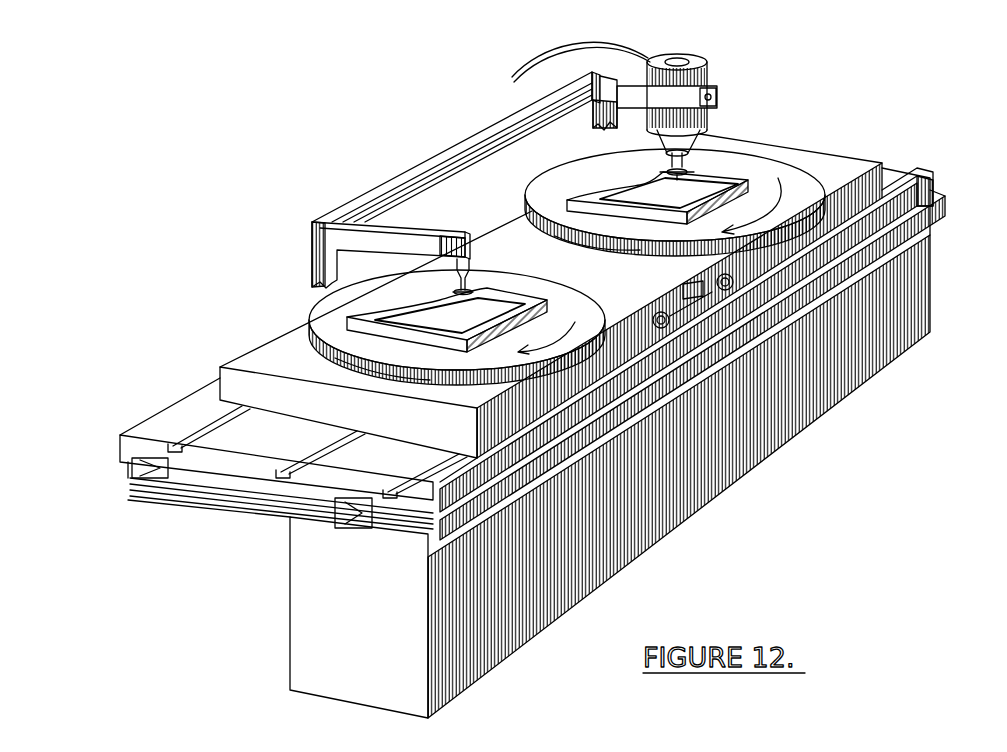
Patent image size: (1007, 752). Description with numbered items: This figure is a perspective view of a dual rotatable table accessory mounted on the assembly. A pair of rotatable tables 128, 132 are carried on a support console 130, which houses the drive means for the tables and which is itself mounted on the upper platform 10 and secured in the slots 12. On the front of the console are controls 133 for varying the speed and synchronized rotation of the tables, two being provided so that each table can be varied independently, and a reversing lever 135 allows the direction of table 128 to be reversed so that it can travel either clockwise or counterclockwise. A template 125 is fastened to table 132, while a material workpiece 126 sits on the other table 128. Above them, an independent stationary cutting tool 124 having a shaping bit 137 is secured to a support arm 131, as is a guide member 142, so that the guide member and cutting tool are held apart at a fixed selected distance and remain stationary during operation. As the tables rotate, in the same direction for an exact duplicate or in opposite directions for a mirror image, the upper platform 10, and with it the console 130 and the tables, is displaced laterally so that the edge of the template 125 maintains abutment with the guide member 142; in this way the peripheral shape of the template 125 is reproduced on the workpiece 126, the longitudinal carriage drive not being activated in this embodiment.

The upper platform 10 is at (898, 186).
The slots 12 is at (322, 458).
The cutting tool 124 is at (672, 55).
The template 125 is at (358, 325).
The material workpiece 126 is at (717, 174).
The rotatable table 128 is at (850, 167).
The support console 130 is at (878, 162).
The support arm 131 is at (478, 135).
The rotatable table 132 is at (348, 345).
The controls 133 is at (670, 327).
The reversing lever 135 is at (712, 296).
The shaping bit 137 is at (688, 178).
The guide member 142 is at (468, 297).